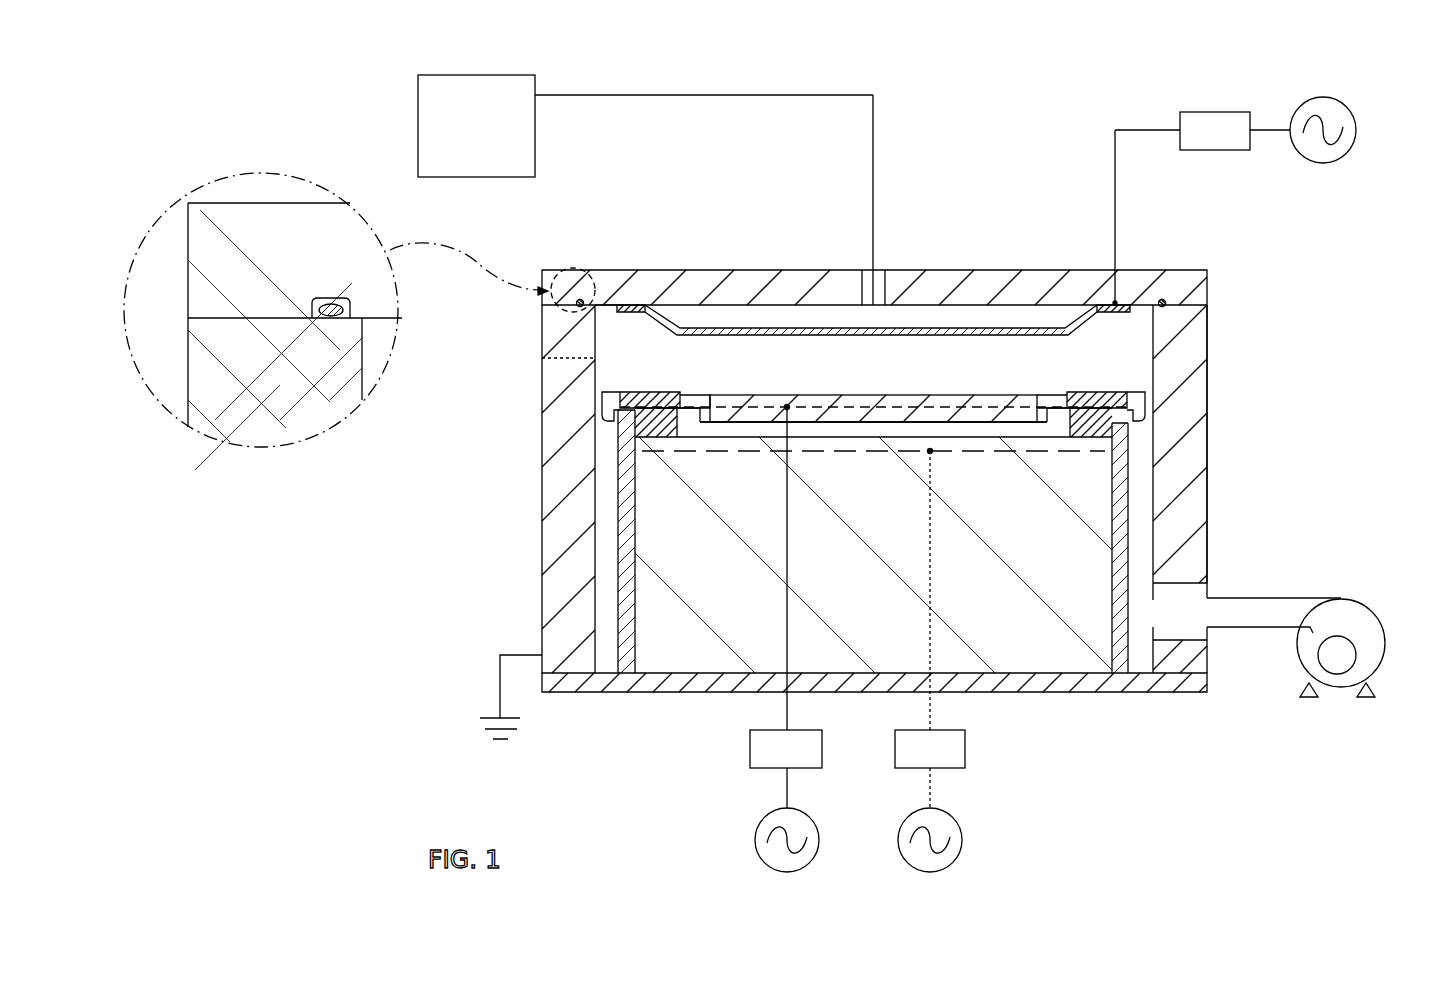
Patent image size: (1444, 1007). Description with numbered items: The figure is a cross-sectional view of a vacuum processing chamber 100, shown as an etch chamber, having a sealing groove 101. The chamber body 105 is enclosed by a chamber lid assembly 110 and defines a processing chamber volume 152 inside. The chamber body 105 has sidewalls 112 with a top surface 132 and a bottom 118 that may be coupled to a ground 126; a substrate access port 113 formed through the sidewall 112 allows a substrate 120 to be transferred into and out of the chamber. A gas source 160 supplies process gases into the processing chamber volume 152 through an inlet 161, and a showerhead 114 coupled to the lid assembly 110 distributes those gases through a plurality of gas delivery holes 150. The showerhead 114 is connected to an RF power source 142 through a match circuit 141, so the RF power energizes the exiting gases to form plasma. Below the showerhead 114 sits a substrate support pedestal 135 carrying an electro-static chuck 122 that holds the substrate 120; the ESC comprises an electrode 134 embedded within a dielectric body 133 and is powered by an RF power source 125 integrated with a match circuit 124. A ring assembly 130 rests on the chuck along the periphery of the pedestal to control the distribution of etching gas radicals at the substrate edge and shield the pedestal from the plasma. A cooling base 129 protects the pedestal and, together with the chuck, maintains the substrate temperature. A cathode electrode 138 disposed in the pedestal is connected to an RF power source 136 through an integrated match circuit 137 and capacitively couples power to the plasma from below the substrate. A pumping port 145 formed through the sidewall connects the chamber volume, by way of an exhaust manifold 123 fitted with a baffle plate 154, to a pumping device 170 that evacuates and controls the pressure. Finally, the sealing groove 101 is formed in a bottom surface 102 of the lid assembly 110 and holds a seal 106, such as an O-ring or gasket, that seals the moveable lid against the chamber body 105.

The processing chamber 100 is at (1302, 271).
The sealing groove 101 is at (581, 298).
The bottom surface 102 is at (604, 319).
The chamber body 105 is at (1210, 345).
The seal 106 is at (345, 310).
The chamber lid assembly 110 is at (1082, 268).
The sidewalls 112 is at (1210, 415).
The substrate access port 113 is at (543, 375).
The showerhead 114 is at (667, 315).
The bottom 118 is at (1025, 694).
The substrate 120 is at (767, 388).
The electro-static chuck 122 is at (830, 403).
The exhaust manifold 123 is at (1118, 650).
The match circuit 124 is at (806, 730).
The RF power source 125 is at (797, 810).
The ground 126 is at (498, 680).
The cooling base 129 is at (1003, 425).
The ring assembly 130 is at (1100, 384).
The top surface 132 is at (553, 292).
The dielectric body 133 is at (722, 418).
The electrode 134 is at (758, 410).
The substrate support pedestal 135 is at (885, 610).
The RF power source 136 is at (940, 810).
The match circuit 137 is at (950, 730).
The cathode electrode 138 is at (877, 455).
The match circuit 141 is at (1205, 112).
The RF power source 142 is at (1350, 102).
The pumping port 145 is at (1212, 630).
The gas delivery holes 150 is at (1020, 342).
The processing chamber volume 152 is at (925, 388).
The baffle plate 154 is at (602, 393).
The gas source 160 is at (485, 75).
The inlet 161 is at (884, 266).
The pumping device 170 is at (1343, 650).